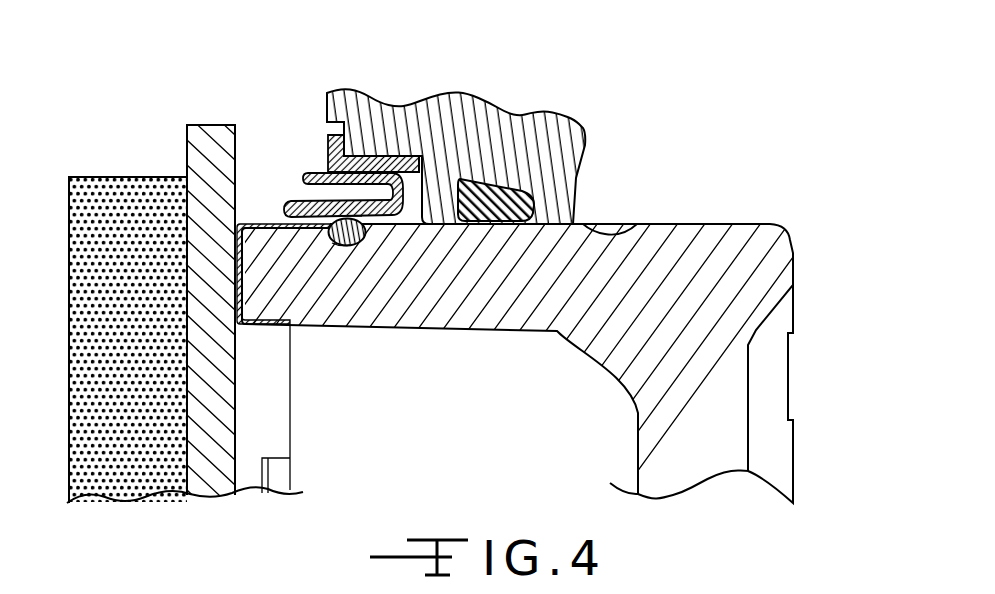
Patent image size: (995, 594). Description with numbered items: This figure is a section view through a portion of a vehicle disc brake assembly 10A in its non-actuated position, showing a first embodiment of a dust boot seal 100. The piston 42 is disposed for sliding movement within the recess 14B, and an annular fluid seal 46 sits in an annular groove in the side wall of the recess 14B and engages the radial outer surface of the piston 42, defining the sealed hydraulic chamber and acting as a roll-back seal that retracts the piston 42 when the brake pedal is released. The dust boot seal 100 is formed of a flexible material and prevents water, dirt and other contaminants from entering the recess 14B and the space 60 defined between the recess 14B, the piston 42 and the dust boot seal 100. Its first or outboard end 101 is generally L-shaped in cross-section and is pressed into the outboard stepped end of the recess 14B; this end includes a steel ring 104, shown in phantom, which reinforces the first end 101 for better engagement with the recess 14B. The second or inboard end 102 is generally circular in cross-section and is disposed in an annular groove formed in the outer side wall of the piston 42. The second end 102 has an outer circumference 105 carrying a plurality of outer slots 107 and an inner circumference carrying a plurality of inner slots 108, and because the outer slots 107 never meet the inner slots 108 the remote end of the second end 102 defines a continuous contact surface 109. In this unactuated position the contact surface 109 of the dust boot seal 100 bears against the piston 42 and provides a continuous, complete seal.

The vehicle disc brake assembly 10A is at (150, 133).
The piston 42 is at (472, 290).
The annular fluid seal 46 is at (517, 208).
The space 60 is at (412, 183).
The dust boot seal 100 is at (317, 135).
The first or outboard end 101 is at (365, 156).
The second or inboard end 102 is at (366, 236).
The steel ring 104 is at (408, 155).
The outer circumference or surface 105 is at (305, 175).
The outer slots 107 is at (333, 244).
The inner slots 108 is at (365, 222).
The contact or sealing surface 109 is at (352, 245).
The recess 14B is at (637, 224).